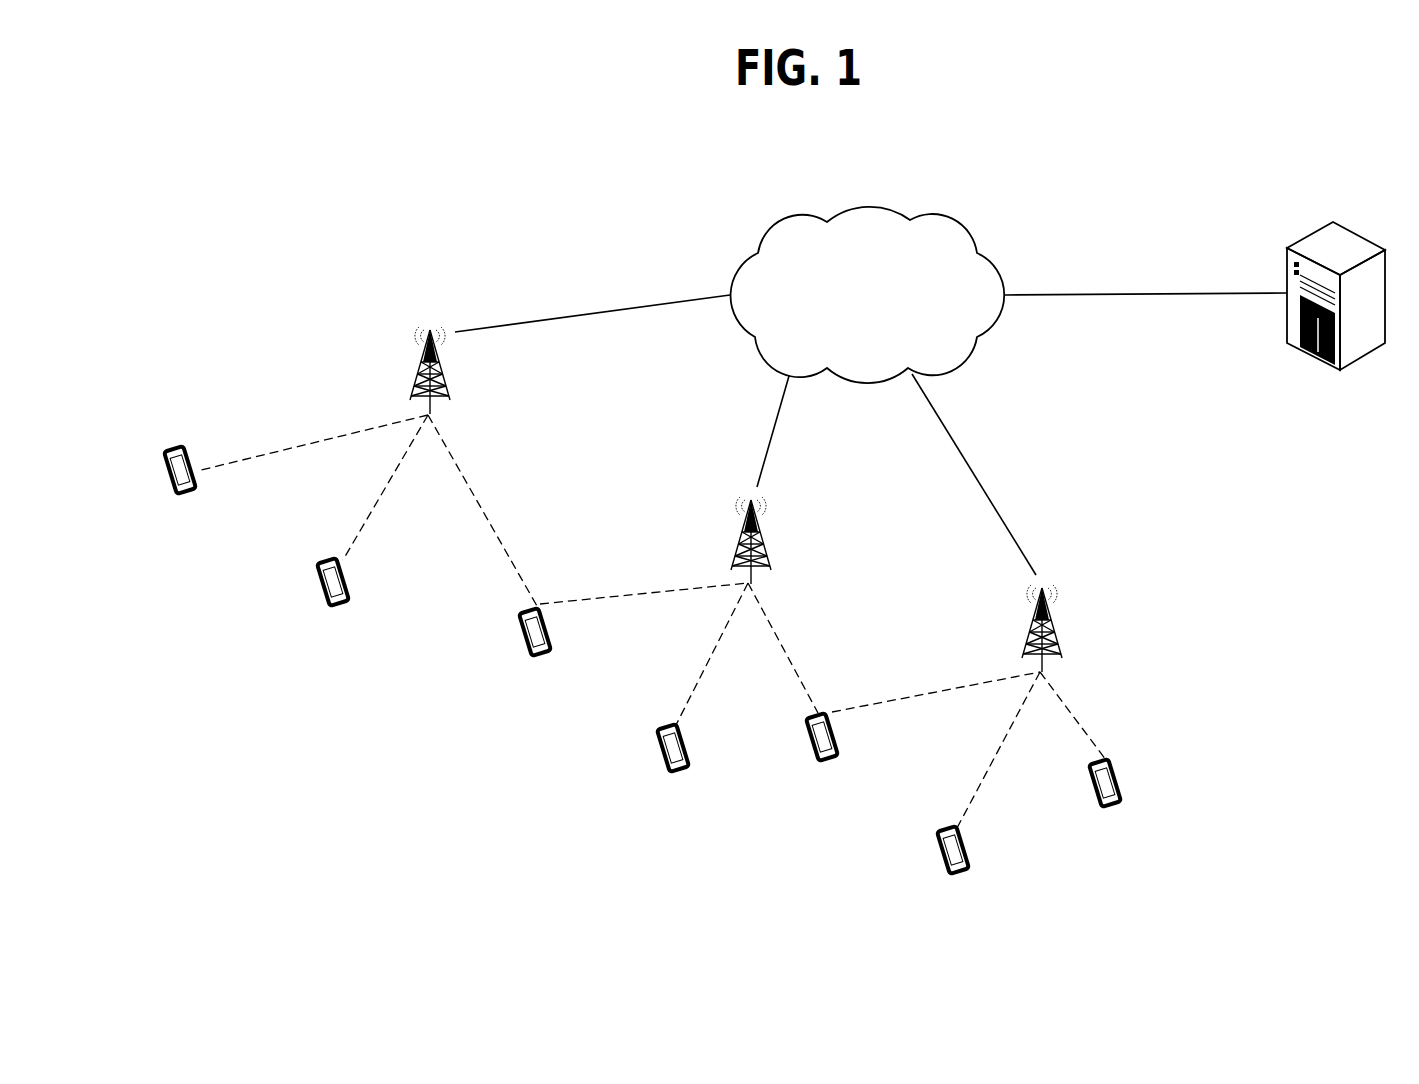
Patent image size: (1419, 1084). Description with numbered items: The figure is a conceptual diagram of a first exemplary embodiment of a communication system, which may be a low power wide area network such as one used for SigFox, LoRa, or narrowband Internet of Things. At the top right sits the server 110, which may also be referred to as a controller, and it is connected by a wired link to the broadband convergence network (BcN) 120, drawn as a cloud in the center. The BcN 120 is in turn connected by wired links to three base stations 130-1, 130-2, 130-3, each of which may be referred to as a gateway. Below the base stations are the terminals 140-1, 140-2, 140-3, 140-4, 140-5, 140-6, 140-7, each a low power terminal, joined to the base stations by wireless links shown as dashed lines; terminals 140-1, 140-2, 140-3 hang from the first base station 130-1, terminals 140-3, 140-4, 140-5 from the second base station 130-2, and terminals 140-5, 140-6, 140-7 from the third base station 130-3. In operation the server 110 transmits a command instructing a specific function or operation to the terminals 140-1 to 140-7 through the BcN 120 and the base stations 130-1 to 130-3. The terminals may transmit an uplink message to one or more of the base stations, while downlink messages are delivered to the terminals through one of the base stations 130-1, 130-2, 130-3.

The server 110 is at (1333, 222).
The broadband convergence network (BcN) 120 is at (868, 208).
The base station 130-1 is at (440, 371).
The base station 130-2 is at (760, 534).
The base station 130-3 is at (1052, 626).
The terminal 140-1 is at (185, 496).
The terminal 140-2 is at (338, 607).
The terminal 140-3 is at (540, 657).
The terminal 140-4 is at (678, 773).
The terminal 140-5 is at (827, 762).
The terminal 140-6 is at (958, 875).
The terminal 140-7 is at (1110, 808).